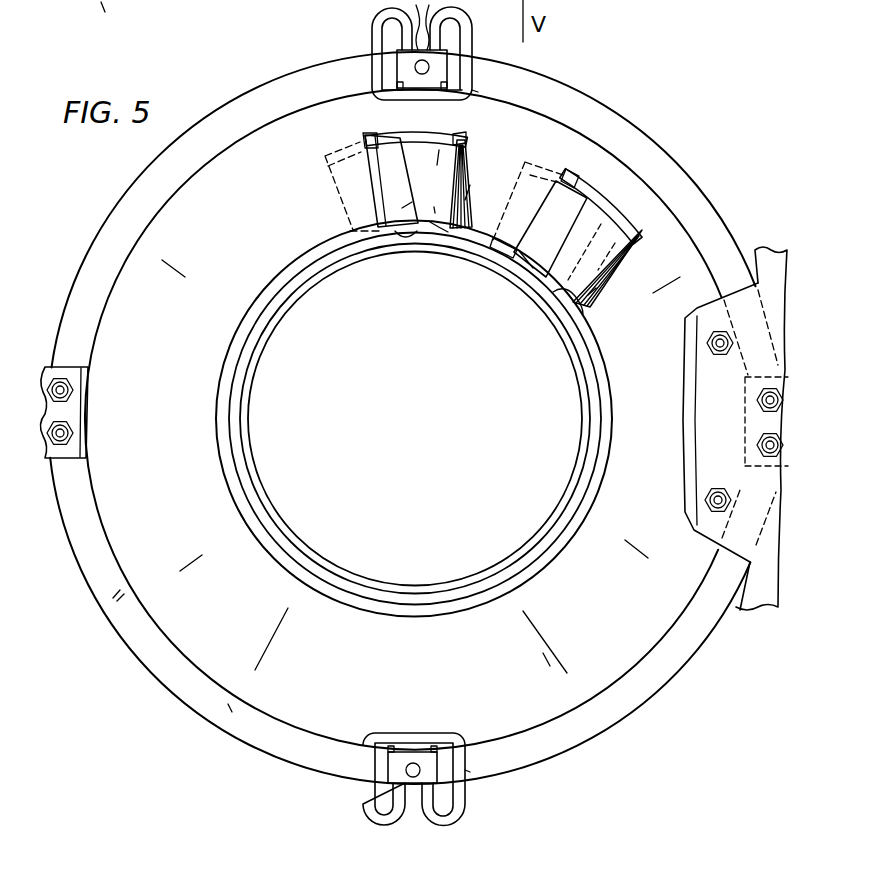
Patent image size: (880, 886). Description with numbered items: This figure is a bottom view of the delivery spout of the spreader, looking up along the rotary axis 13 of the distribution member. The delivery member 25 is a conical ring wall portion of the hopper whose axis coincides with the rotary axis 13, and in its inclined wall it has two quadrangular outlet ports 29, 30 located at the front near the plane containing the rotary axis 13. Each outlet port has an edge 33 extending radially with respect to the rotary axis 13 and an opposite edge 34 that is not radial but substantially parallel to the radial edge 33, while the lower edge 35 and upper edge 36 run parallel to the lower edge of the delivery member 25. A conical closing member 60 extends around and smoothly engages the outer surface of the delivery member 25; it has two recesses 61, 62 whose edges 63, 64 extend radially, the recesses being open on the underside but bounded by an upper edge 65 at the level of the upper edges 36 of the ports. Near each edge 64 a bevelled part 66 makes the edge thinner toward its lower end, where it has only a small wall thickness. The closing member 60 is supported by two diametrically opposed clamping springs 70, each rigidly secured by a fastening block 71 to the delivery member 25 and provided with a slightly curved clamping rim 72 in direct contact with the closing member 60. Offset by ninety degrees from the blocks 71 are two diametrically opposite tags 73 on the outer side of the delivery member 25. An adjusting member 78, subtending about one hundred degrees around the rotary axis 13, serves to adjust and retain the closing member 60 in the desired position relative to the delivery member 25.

The rotary axis 13 is at (404, 415).
The delivery member 25 is at (104, 231).
The outlet port 29 is at (400, 210).
The outlet port 30 is at (558, 235).
The radial edge 33 is at (340, 202).
The edge 34 is at (412, 202).
The lower edge 35 is at (401, 234).
The upper edge 36 is at (363, 133).
The closing member 60 is at (590, 665).
The recess 61 is at (460, 132).
The recess 62 is at (640, 234).
The edge 63 is at (372, 180).
The edge 64 is at (474, 248).
The upper edge 65 is at (417, 130).
The bevelled part 66 is at (470, 185).
The clamping spring 70 is at (372, 35).
The fastening block 71 is at (405, 750).
The clamping rim 72 is at (474, 85).
The tag 73 is at (80, 395).
The adjusting member 78 is at (735, 612).